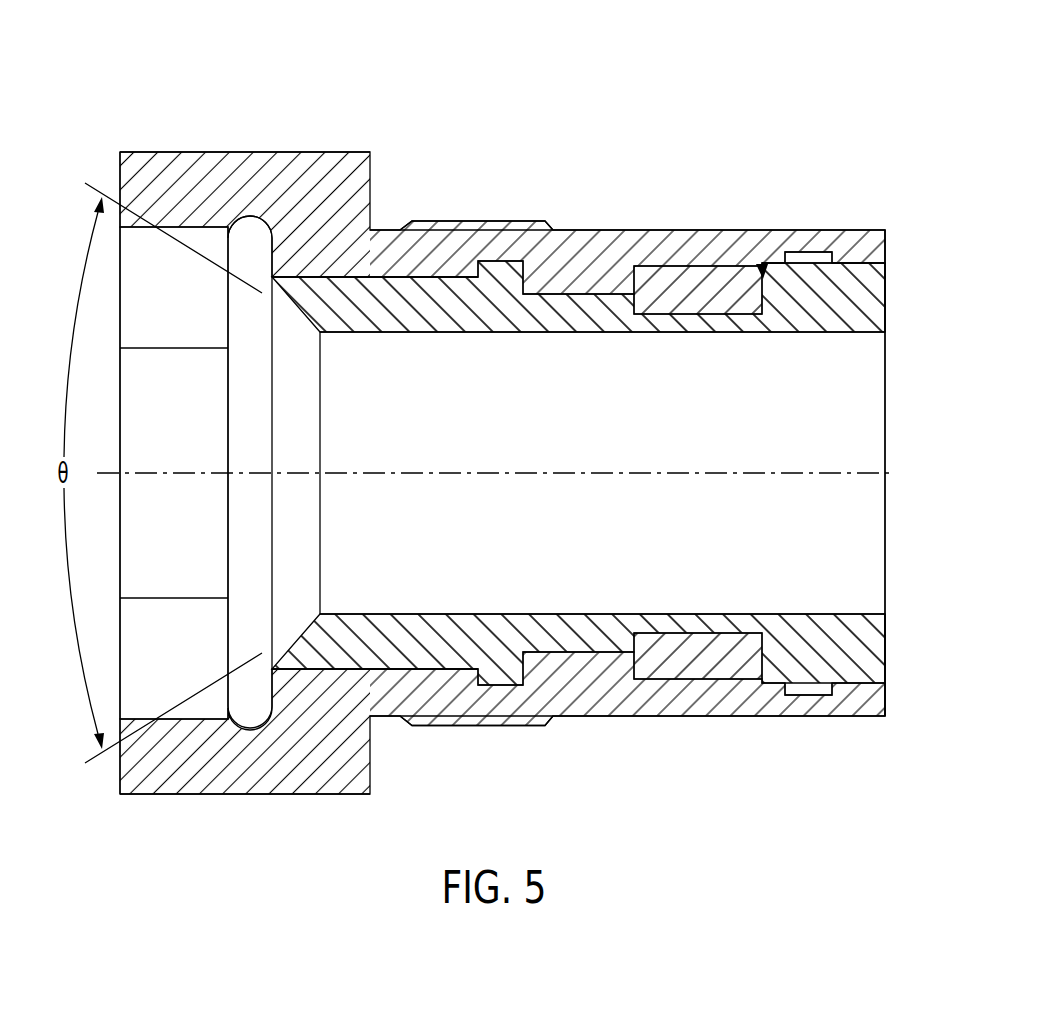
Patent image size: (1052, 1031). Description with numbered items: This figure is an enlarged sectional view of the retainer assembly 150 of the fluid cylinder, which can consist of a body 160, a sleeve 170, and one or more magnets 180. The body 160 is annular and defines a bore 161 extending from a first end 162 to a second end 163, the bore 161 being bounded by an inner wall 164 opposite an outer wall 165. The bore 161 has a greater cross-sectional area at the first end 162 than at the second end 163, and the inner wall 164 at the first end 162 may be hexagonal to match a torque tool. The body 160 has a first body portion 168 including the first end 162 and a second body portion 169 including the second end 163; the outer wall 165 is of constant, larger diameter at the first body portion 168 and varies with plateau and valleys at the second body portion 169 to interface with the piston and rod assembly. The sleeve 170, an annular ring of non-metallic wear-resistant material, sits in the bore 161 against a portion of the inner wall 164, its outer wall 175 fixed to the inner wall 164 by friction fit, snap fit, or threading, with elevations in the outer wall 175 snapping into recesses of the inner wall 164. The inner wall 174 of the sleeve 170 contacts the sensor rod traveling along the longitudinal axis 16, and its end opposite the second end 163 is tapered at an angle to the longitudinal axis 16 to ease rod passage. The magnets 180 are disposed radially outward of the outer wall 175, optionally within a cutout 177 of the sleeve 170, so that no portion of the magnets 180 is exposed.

The retainer assembly 150 is at (94, 93).
The first body portion 168 is at (236, 102).
The second body portion 169 is at (671, 168).
The outer wall 165 is at (465, 222).
The magnets 180 is at (712, 275).
The cutout 177 is at (763, 265).
The outer wall 175 is at (842, 252).
The sleeve 170 is at (865, 300).
The inner wall 174 is at (835, 333).
The longitudinal axis 16 is at (893, 468).
The inner wall 164 is at (140, 228).
The bore 161 is at (146, 532).
The first end 162 is at (118, 773).
The body 160 is at (562, 668).
The second end 163 is at (885, 700).